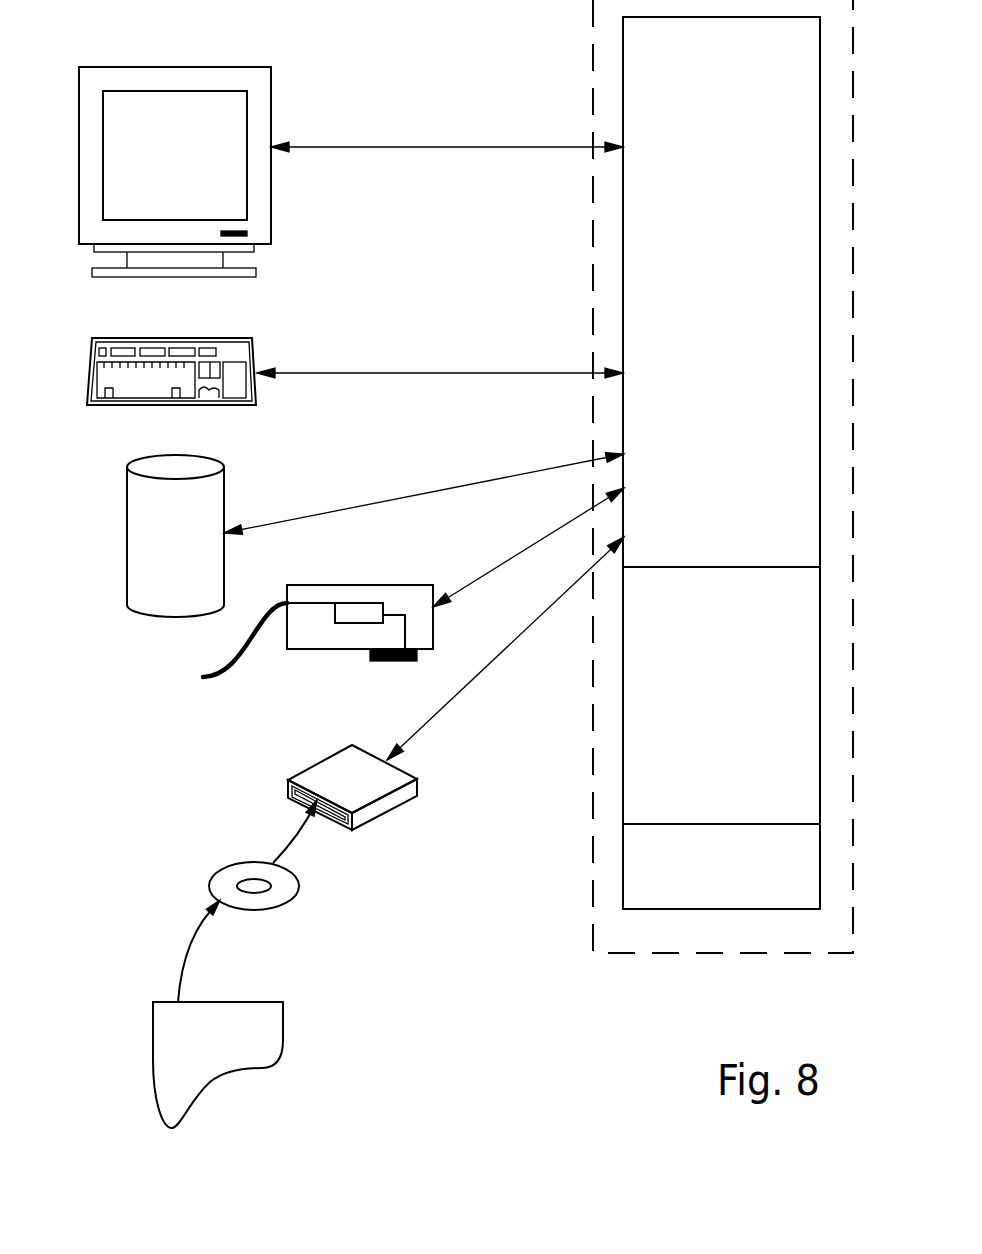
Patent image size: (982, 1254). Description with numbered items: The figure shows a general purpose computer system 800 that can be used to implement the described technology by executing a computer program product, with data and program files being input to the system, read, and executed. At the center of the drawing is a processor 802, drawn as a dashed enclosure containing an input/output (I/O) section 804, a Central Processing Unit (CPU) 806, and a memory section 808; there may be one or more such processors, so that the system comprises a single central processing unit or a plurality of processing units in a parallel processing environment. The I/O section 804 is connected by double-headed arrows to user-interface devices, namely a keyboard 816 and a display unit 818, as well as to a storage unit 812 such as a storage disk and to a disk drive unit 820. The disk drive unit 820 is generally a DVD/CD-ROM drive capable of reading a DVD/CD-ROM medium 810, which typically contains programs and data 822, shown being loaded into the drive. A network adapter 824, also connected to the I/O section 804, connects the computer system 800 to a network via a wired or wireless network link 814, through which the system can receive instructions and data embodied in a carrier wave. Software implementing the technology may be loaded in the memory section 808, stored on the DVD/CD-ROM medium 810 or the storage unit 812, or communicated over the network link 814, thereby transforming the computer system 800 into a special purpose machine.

The general purpose computer system 800 is at (556, 1042).
The processor 802 is at (593, 49).
The input/output (I/O) section 804 is at (721, 292).
The central processing unit (CPU) 806 is at (721, 695).
The memory section 808 is at (721, 866).
The DVD/CD-ROM medium 810 is at (227, 865).
The storage unit 812 is at (127, 487).
The network link 814 is at (223, 680).
The keyboard 816 is at (130, 338).
The display unit 818 is at (142, 67).
The disk drive unit 820 is at (337, 778).
The programs and data 822 is at (283, 1023).
The network adapter 824 is at (337, 649).